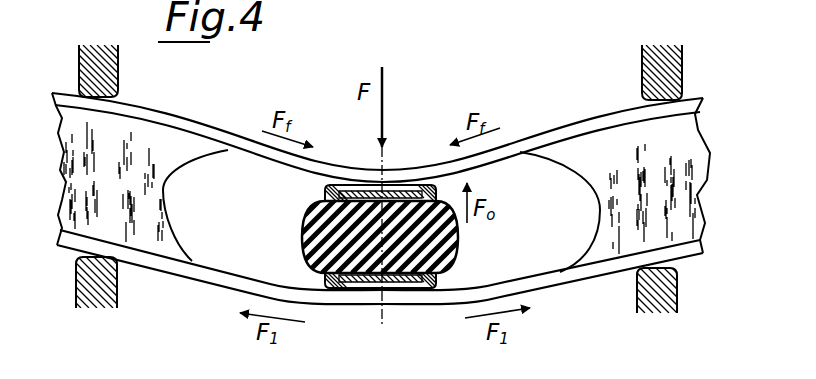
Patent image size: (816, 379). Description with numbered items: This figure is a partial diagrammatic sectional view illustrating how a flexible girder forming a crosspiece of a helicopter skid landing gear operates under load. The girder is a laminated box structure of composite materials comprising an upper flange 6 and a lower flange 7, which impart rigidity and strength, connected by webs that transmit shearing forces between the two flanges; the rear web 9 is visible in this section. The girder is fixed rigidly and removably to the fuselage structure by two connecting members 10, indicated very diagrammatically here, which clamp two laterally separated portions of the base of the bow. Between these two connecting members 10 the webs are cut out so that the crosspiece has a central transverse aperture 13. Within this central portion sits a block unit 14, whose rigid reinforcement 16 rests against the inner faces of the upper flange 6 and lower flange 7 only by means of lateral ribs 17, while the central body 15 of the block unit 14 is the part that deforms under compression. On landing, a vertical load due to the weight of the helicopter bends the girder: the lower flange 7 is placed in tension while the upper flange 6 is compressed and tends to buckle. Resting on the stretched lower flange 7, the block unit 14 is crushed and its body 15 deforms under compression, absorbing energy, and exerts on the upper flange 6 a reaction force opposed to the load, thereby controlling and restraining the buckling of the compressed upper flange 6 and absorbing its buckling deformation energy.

The upper flange 6 is at (178, 119).
The lower flange 7 is at (172, 268).
The rear web 9 is at (100, 183).
The connecting member 10 is at (107, 73).
The central transverse aperture 13 is at (537, 190).
The block unit 14 is at (290, 231).
The pressure body 15 is at (457, 244).
The rigid reinforcement 16 is at (398, 191).
The lateral rib 17 is at (430, 187).